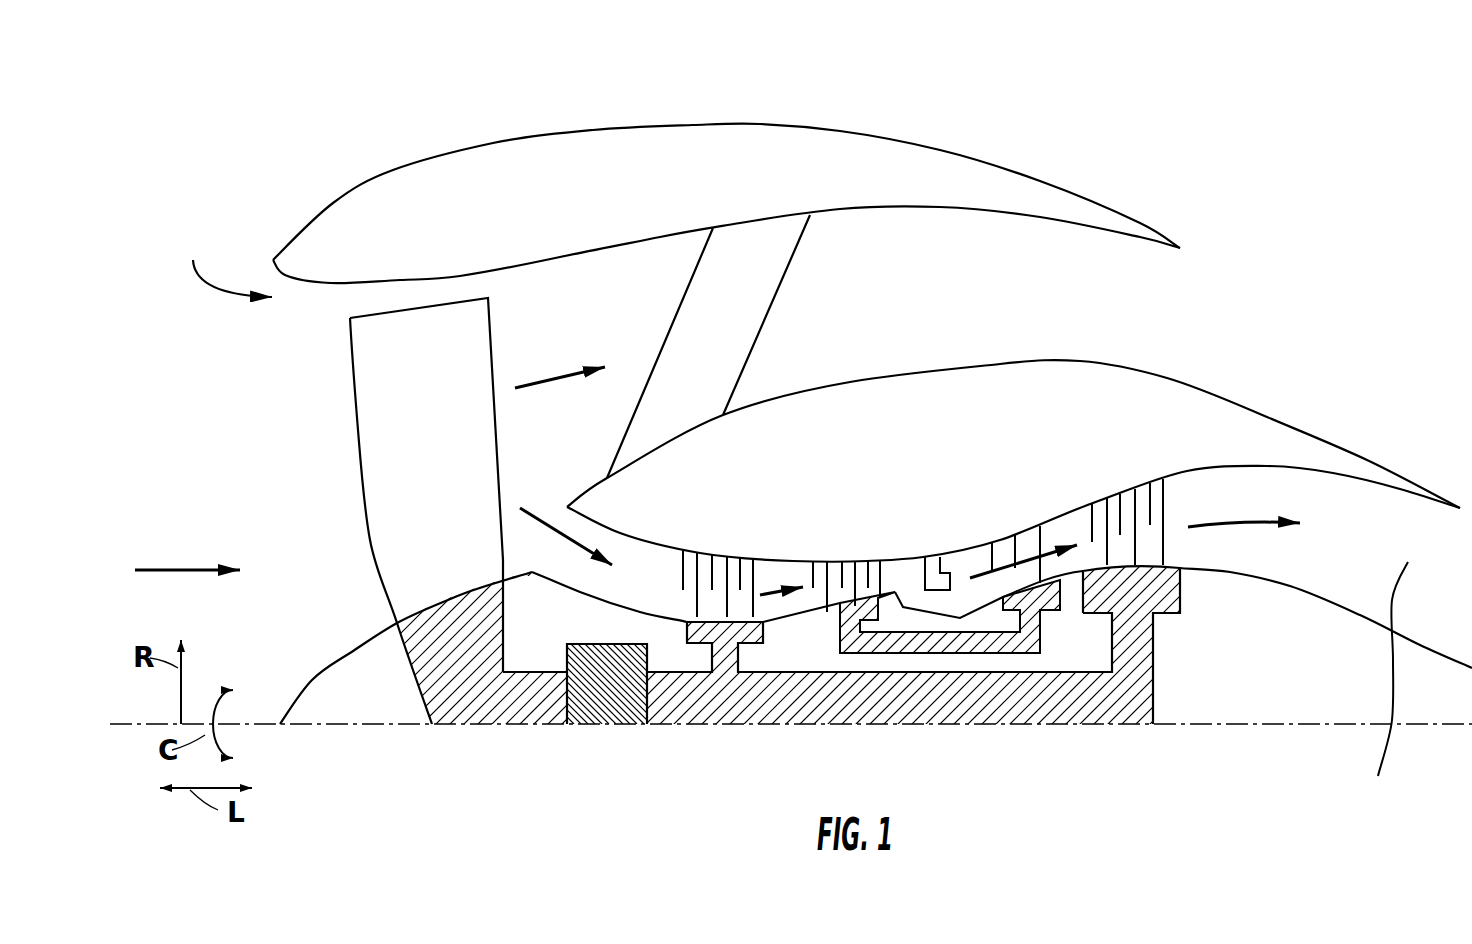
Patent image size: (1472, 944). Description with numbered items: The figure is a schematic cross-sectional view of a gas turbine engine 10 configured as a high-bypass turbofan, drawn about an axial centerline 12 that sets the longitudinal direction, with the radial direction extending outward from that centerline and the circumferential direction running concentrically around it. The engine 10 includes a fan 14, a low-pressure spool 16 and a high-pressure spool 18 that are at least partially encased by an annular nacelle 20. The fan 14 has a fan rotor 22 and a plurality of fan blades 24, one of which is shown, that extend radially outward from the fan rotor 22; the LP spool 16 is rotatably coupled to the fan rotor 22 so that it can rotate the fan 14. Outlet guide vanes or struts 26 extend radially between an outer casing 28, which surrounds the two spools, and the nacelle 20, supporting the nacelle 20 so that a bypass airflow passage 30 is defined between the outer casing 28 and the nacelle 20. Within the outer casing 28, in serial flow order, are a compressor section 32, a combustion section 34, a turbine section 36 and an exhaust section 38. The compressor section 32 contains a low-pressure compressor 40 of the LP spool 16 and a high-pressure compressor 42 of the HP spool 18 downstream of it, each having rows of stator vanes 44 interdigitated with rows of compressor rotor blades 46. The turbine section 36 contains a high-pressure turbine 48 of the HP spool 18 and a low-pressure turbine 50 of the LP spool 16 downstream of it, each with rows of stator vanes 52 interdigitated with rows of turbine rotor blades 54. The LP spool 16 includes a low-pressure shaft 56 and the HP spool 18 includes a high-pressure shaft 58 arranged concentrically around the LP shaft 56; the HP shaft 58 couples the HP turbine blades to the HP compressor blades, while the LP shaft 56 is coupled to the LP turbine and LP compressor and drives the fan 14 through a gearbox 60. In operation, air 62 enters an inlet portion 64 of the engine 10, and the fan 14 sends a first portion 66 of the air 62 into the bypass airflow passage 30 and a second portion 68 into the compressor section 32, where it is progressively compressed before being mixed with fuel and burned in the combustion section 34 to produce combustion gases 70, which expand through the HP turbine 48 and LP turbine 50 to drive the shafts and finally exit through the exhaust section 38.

The gas turbine engine 10 is at (302, 85).
The axial centerline 12 is at (1253, 730).
The fan 14 is at (333, 387).
The low-pressure spool 16 is at (715, 740).
The high-pressure spool 18 is at (1020, 670).
The annular nacelle 20 is at (403, 175).
The fan rotor 22 is at (350, 653).
The fan blade 24 is at (365, 492).
The outlet guide vane or strut 26 is at (678, 302).
The outer casing 28 is at (1080, 360).
The bypass airflow passage 30 is at (899, 305).
The compressor section 32 is at (790, 520).
The combustion section 34 is at (927, 532).
The turbine section 36 is at (1043, 490).
The exhaust section 38 is at (1409, 542).
The low-pressure compressor 40 is at (707, 527).
The high-pressure compressor 42 is at (840, 532).
The stator vanes 44 is at (677, 562).
The compressor rotor blades 46 is at (770, 580).
The high-pressure turbine 48 is at (1002, 520).
The low-pressure turbine 50 is at (1130, 457).
The stator vanes 52 is at (990, 560).
The turbine rotor blades 54 is at (1077, 572).
The low-pressure shaft 56 is at (840, 703).
The high-pressure shaft 58 is at (1000, 655).
The gearbox 60 is at (617, 702).
The air 62 is at (185, 570).
The inlet portion 64 is at (226, 258).
The first portion of the air 66 is at (563, 370).
The second portion of the air 68 is at (538, 518).
The combustion gases 70 is at (1063, 540).